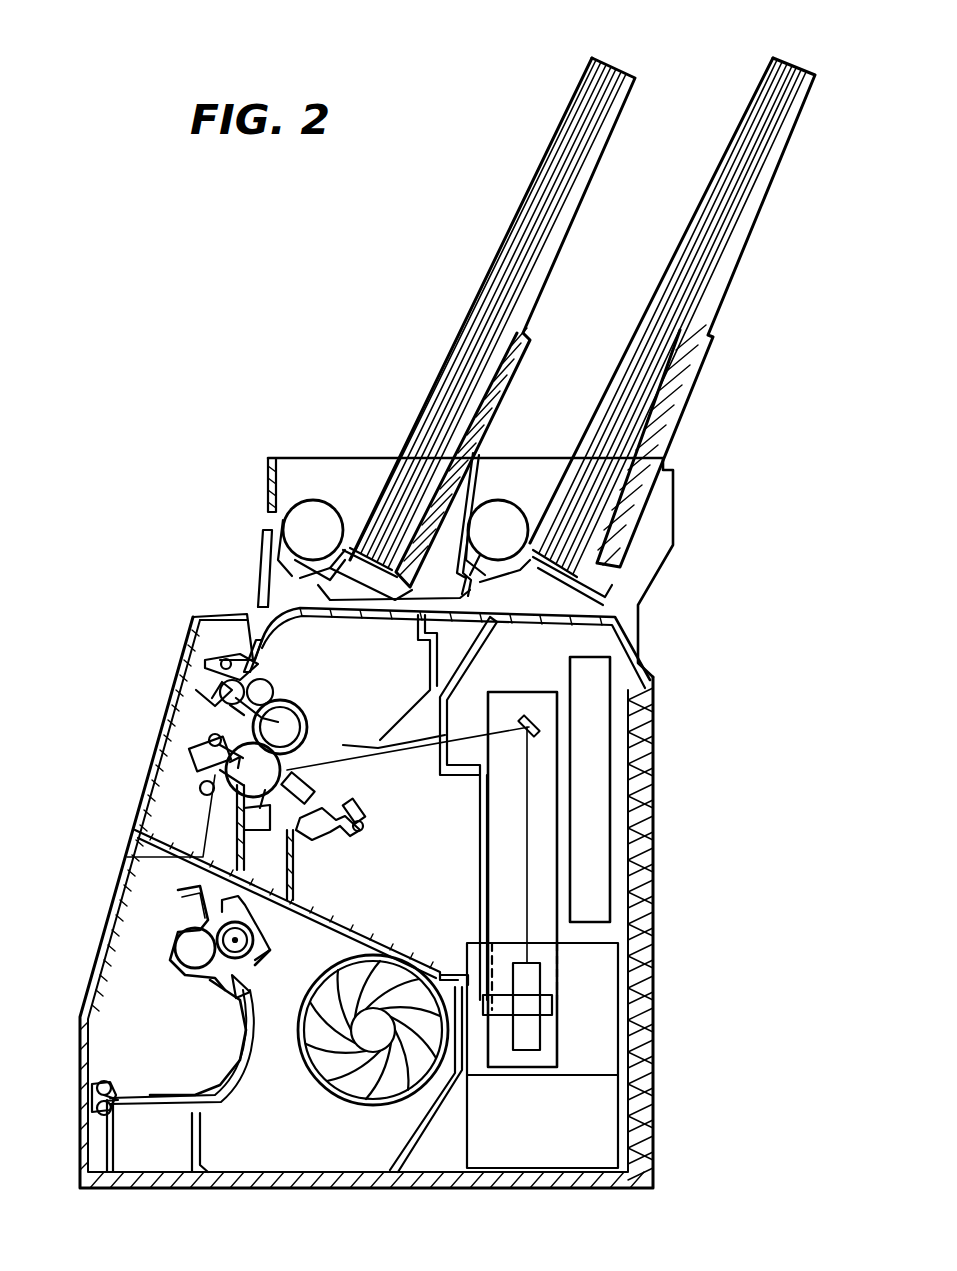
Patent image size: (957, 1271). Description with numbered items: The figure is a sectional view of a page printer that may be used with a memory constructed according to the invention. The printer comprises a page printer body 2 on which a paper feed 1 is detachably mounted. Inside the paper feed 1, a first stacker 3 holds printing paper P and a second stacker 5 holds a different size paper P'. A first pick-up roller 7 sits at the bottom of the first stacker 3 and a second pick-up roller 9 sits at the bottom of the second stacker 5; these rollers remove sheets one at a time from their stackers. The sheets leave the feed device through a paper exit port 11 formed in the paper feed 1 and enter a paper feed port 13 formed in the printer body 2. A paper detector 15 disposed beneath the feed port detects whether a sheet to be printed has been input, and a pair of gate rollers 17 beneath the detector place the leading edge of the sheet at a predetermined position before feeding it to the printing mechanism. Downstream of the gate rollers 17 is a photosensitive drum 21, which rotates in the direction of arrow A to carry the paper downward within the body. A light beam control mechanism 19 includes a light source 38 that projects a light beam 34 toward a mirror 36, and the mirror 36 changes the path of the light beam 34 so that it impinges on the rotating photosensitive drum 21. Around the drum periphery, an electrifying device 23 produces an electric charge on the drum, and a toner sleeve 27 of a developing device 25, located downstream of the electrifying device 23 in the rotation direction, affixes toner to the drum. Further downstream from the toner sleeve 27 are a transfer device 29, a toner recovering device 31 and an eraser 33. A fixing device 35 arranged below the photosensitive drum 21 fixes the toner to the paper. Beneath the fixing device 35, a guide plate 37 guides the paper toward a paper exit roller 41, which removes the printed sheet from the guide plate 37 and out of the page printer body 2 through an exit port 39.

The paper feed 1 is at (684, 534).
The page printer body 2 is at (684, 997).
The first stacker 3 is at (584, 204).
The second stacker 5 is at (752, 241).
The first pick-up roller 7 is at (313, 525).
The second pick-up roller 9 is at (498, 528).
The paper exit port 11 is at (266, 594).
The paper feed port 13 is at (262, 614).
The paper detector 15 is at (210, 660).
The gate rollers 17 is at (265, 692).
The light beam control mechanism 19 is at (548, 748).
The photosensitive drum 21 is at (240, 780).
The electrifying device 23 is at (314, 790).
The developing device 25 is at (418, 663).
The toner sleeve 27 is at (288, 728).
The transfer device 29 is at (190, 764).
The toner recovering device 31 is at (265, 842).
The eraser 33 is at (305, 820).
The light beam 34 is at (527, 798).
The fixing device 35 is at (193, 946).
The mirror 36 is at (534, 720).
The guide plate 37 is at (238, 1090).
The light source 38 is at (538, 1046).
The exit port 39 is at (92, 1096).
The paper exit roller 41 is at (110, 1084).